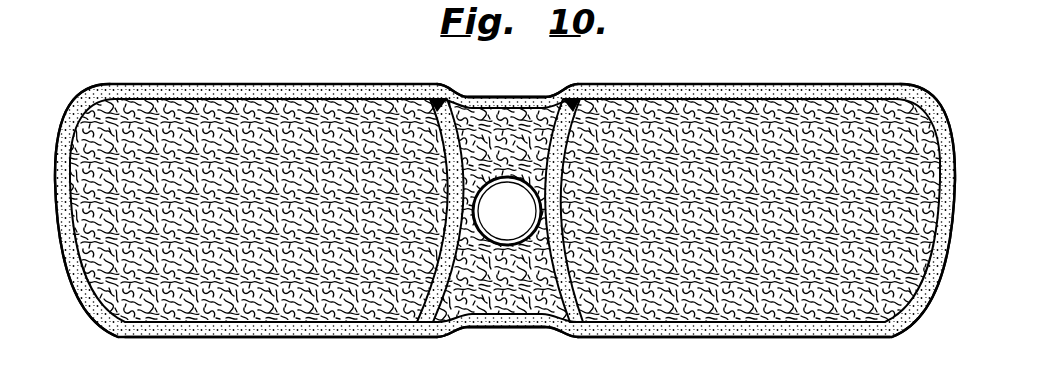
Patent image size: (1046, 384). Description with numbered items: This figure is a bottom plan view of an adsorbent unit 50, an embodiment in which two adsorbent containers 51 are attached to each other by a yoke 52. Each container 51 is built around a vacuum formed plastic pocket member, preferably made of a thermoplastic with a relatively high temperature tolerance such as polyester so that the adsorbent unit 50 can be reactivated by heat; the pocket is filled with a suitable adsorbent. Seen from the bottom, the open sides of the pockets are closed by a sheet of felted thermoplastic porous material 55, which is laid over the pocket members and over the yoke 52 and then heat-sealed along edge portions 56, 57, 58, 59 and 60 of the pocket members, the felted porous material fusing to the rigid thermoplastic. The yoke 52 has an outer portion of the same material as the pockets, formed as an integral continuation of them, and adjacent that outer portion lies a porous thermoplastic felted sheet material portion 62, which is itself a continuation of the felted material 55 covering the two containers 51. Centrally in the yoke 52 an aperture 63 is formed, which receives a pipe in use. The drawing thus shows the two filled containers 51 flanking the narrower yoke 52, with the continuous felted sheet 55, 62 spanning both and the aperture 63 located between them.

The adsorbent unit 50 is at (662, 74).
The adsorbent container 51 is at (228, 84).
The yoke 52 is at (502, 98).
The felted thermoplastic porous material 55 is at (300, 126).
The edge portion 56 is at (148, 96).
The edge portion 57 is at (62, 166).
The edge portion 58 is at (250, 340).
The edge portion 59 is at (520, 98).
The edge portion 60 is at (442, 112).
The porous thermoplastic felted sheet material portion 62 is at (483, 326).
The aperture 63 is at (528, 226).